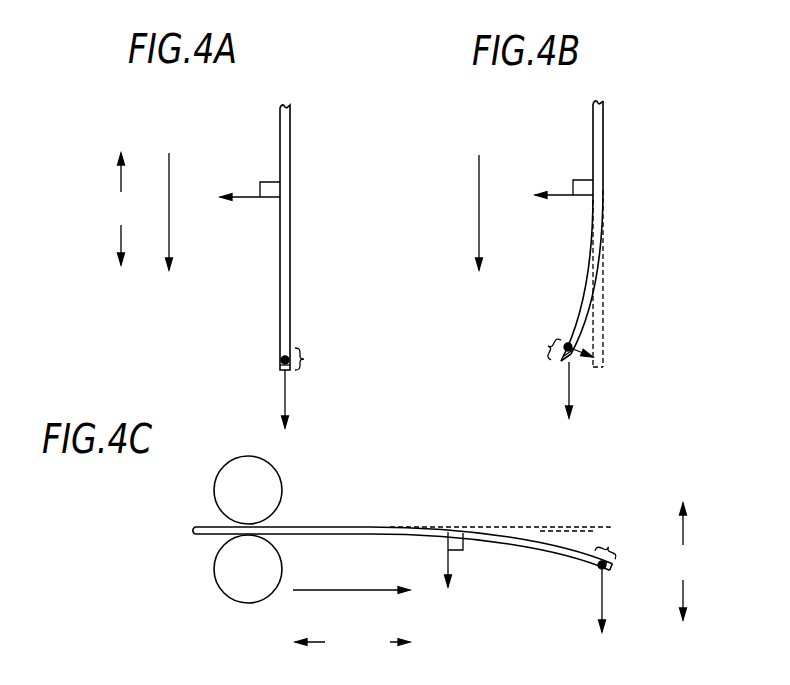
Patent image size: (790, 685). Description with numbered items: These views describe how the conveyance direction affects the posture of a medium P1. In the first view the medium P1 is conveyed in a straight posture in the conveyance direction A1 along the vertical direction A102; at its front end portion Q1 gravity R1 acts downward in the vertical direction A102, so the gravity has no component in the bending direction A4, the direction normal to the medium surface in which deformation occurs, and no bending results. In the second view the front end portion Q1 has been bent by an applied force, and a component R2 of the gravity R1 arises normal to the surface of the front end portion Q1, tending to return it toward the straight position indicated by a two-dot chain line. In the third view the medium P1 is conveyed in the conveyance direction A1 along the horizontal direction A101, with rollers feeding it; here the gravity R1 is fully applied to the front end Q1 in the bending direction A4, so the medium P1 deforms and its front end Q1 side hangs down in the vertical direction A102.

In FIG. 4A, the medium P1 is at (292, 130).
In FIG. 4B, the medium P1 is at (605, 130).
In FIG. 4C, the medium P1 is at (295, 527).
In FIG. 4A, the front end portion Q1 is at (309, 360).
In FIG. 4B, the front end portion Q1 is at (547, 344).
In FIG. 4C, the front end portion Q1 is at (616, 548).
In FIG. 4A, the gravity R1 is at (272, 399).
In FIG. 4B, the gravity R1 is at (555, 390).
In FIG. 4C, the gravity R1 is at (589, 598).
In FIG. 4B, the component of the vertical line direction R2 is at (585, 374).
In FIG. 4A, the conveyance direction A1 is at (174, 197).
In FIG. 4B, the conveyance direction A1 is at (484, 196).
In FIG. 4C, the conveyance direction A1 is at (351, 605).
In FIG. 4A, the bending direction A4 is at (235, 197).
In FIG. 4B, the bending direction A4 is at (547, 196).
In FIG. 4C, the bending direction A4 is at (467, 559).
In FIG. 4C, the horizontal direction A101 is at (352, 644).
In FIG. 4A, the vertical direction A102 is at (121, 209).
In FIG. 4C, the vertical direction A102 is at (684, 561).